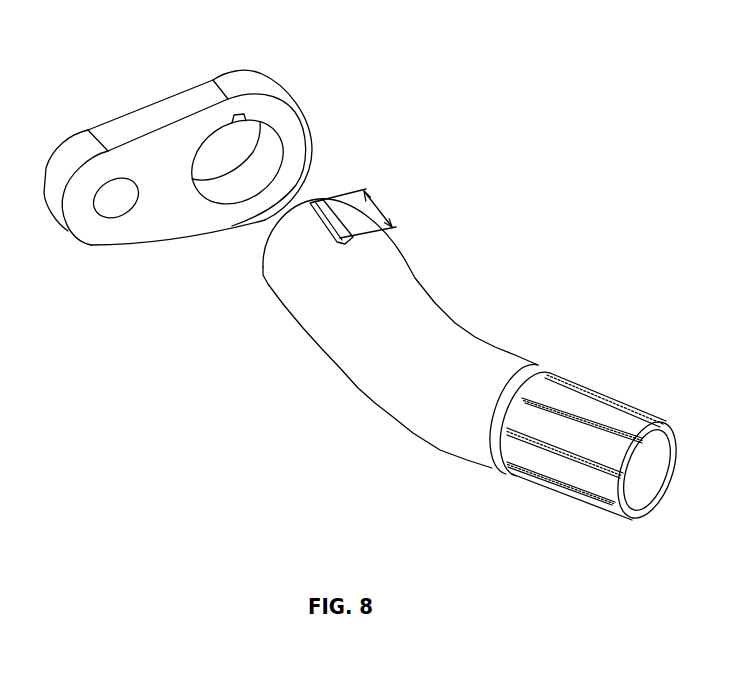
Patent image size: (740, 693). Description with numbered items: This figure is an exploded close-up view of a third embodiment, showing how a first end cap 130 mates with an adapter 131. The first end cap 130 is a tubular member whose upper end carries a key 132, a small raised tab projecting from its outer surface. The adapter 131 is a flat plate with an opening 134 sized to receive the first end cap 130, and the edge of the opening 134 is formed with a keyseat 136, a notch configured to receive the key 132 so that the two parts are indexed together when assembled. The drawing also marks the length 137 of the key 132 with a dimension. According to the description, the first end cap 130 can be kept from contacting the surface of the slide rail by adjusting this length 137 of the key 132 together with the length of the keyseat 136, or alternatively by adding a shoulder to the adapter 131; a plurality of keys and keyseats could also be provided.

The first end cap 130 is at (383, 268).
The adapter 131 is at (137, 118).
The key 132 is at (323, 200).
The opening 134 is at (213, 203).
The keyseat 136 is at (242, 116).
The length of the key 137 is at (370, 207).